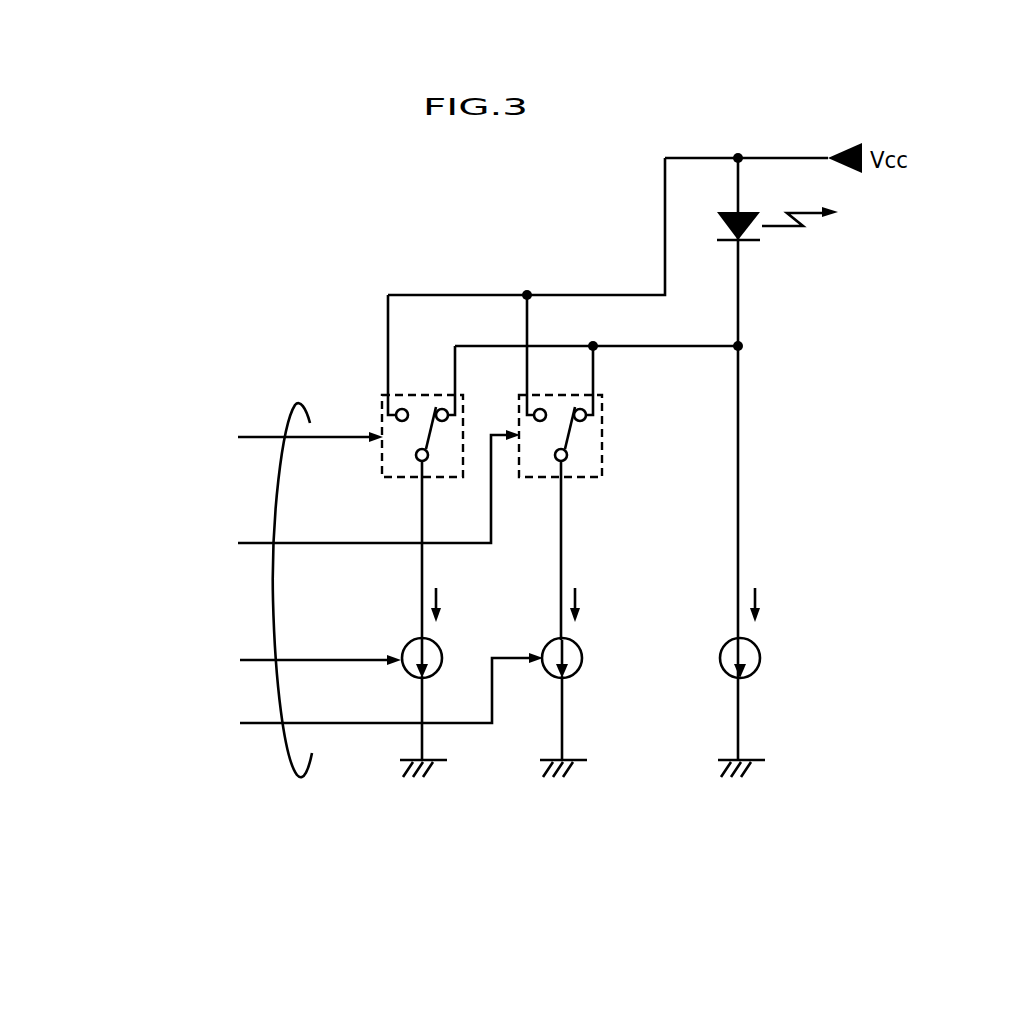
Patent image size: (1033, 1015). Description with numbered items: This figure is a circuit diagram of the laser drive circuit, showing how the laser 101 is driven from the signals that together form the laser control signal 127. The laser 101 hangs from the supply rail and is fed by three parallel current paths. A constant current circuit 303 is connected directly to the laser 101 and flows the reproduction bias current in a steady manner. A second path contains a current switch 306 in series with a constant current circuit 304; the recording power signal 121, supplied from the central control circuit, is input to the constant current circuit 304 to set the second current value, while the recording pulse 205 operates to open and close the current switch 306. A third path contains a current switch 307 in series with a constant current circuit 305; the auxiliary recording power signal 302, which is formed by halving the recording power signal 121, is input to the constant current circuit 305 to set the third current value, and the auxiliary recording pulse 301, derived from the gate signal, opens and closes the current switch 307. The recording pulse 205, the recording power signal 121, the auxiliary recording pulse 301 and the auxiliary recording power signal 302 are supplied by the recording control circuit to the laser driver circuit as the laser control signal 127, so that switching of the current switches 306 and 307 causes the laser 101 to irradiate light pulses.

The laser 101 is at (777, 459).
The recording power signal 121 is at (282, 699).
The laser control signal 127 is at (277, 617).
The recording pulse 205 is at (289, 497).
The auxiliary recording pulse 301 is at (220, 421).
The auxiliary recording power signal 302 is at (211, 646).
The constant current circuit 303 is at (822, 679).
The constant current circuit 304 is at (589, 679).
The constant current circuit 305 is at (416, 679).
The current switch 306 is at (613, 517).
The current switch 307 is at (385, 499).